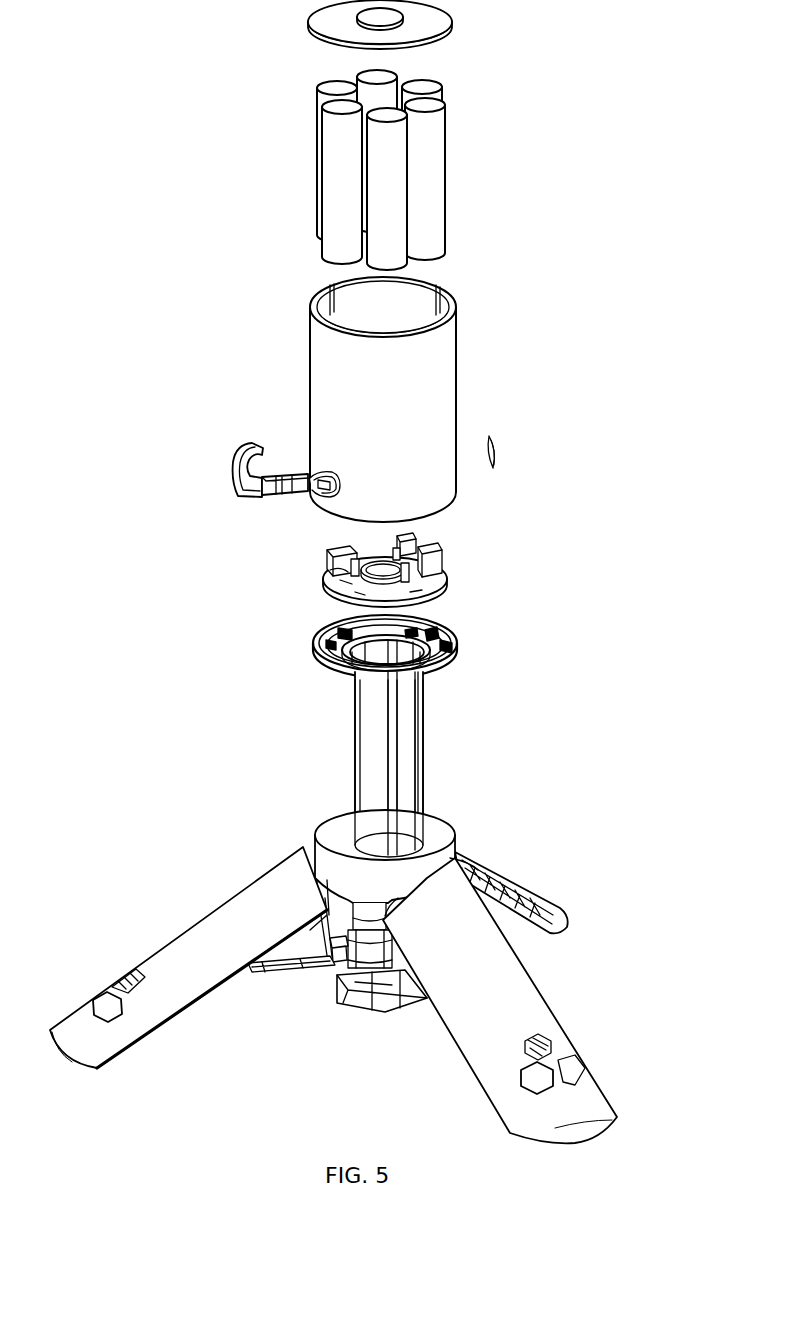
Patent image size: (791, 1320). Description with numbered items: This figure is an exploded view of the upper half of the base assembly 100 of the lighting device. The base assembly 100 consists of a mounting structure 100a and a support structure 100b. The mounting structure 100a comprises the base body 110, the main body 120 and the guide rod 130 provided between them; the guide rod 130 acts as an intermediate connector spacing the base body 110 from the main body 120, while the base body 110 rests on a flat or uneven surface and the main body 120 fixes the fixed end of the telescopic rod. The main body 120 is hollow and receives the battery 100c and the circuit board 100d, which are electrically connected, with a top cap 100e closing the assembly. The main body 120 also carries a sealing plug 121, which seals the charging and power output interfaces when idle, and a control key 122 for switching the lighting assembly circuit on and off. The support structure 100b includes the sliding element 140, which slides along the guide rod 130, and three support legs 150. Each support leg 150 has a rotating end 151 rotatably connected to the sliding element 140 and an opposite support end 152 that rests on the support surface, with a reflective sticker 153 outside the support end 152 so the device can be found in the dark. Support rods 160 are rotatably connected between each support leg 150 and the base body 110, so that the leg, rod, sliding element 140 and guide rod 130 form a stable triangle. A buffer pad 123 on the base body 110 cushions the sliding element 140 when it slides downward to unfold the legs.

The base assembly 100 is at (120, 60).
The mounting structure 100a is at (500, 658).
The support structure 100b is at (230, 844).
The battery 100c is at (438, 190).
The circuit board 100d is at (446, 578).
The top cap 100e is at (380, 24).
The base body 110 is at (360, 1012).
The main body 120 is at (457, 393).
The sealing plug 121 is at (248, 497).
The control key 122 is at (495, 470).
The buffer pad 123 is at (343, 942).
The guide rod 130 is at (425, 750).
The sliding element 140 is at (332, 823).
The support legs 150 is at (184, 938).
The rotating end 151 is at (465, 850).
The support end 152 is at (565, 920).
The reflective sticker 153 is at (110, 990).
The support rods 160 is at (278, 978).